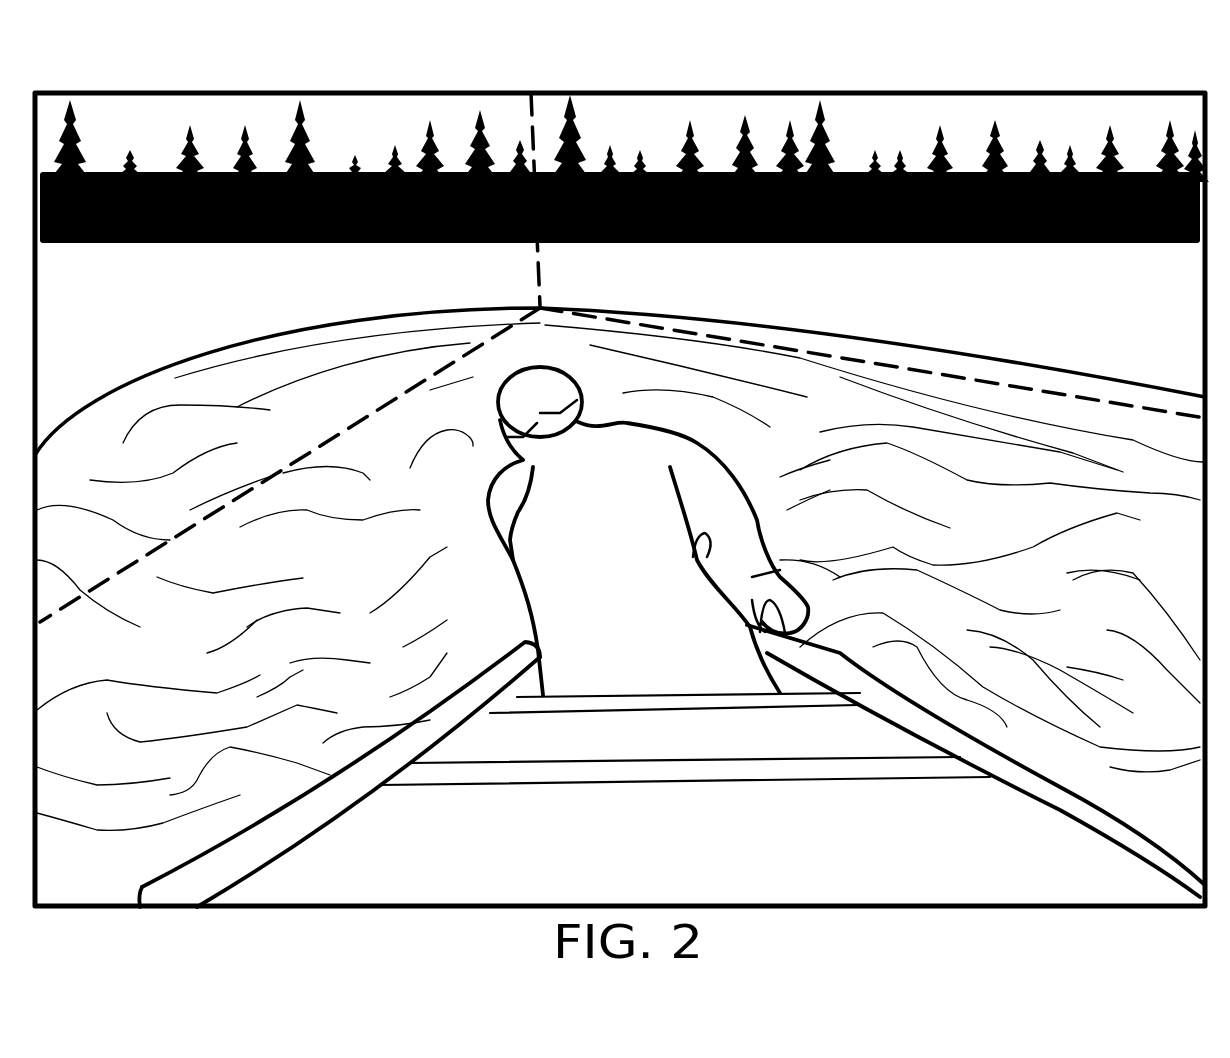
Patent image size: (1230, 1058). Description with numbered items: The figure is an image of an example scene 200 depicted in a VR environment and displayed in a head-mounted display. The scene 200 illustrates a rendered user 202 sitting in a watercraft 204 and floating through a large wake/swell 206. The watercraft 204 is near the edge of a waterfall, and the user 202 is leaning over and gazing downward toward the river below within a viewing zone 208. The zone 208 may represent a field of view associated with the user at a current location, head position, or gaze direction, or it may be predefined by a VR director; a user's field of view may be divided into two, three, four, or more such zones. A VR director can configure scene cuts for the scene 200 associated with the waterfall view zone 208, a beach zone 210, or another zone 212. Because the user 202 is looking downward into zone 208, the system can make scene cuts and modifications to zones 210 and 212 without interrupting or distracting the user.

The scene 200 is at (114, 80).
The rendered user 202 is at (495, 481).
The watercraft 204 is at (810, 856).
The wake/swell 206 is at (203, 692).
The viewing zone 208 is at (294, 556).
The beach zone 210 is at (127, 331).
The another zone 212 is at (1144, 340).